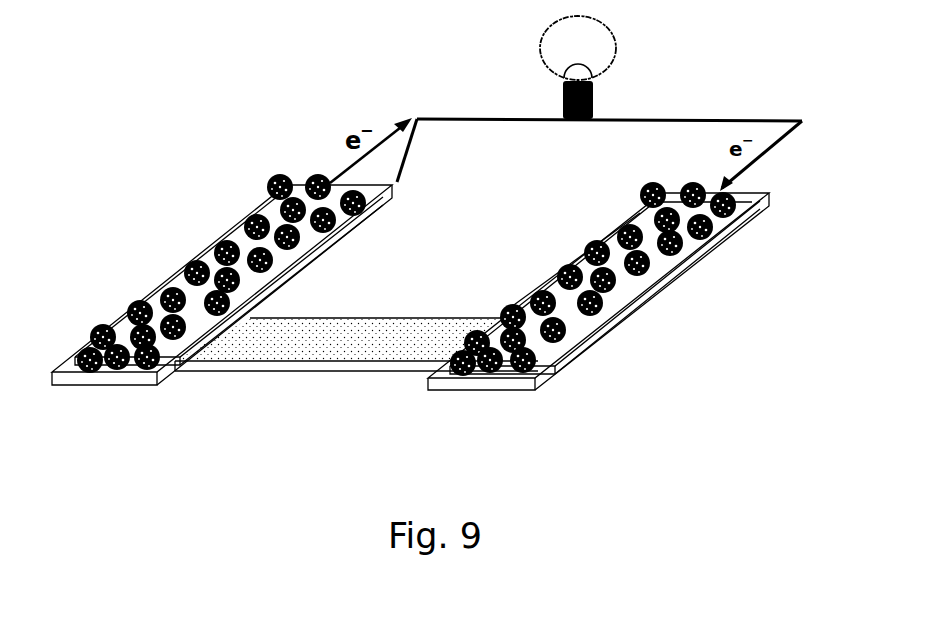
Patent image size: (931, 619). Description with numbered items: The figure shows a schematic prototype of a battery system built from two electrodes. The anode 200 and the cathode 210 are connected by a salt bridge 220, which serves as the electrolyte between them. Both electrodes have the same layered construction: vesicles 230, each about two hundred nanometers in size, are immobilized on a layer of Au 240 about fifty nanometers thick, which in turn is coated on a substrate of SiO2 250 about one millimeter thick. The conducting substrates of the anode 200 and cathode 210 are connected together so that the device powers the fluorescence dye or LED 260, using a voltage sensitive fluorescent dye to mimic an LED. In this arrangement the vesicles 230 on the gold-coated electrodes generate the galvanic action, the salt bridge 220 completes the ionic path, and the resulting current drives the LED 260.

The anode 200 is at (217, 213).
The cathode 210 is at (568, 242).
The salt bridge 220 is at (317, 378).
The vesicles 230 is at (712, 245).
The Au 240 is at (608, 319).
The SiO2 250 is at (537, 382).
The fluorescence dye or LED 260 is at (575, 127).